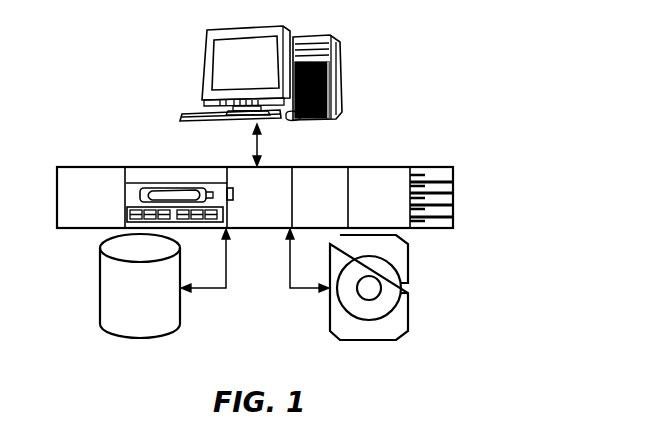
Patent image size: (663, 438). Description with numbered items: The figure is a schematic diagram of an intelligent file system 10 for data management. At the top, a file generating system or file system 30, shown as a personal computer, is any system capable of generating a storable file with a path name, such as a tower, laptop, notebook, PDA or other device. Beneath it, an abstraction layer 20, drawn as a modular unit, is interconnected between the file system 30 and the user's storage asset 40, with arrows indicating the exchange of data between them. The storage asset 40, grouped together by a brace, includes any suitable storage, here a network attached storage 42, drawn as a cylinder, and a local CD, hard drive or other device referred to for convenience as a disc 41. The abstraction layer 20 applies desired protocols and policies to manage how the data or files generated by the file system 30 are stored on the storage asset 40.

The intelligent file system 10 is at (497, 161).
The abstraction layer 20 is at (395, 167).
The file generating system 30 is at (316, 37).
The storage asset 40 is at (474, 232).
The disc 41 is at (390, 306).
The network attached storage 42 is at (99, 288).